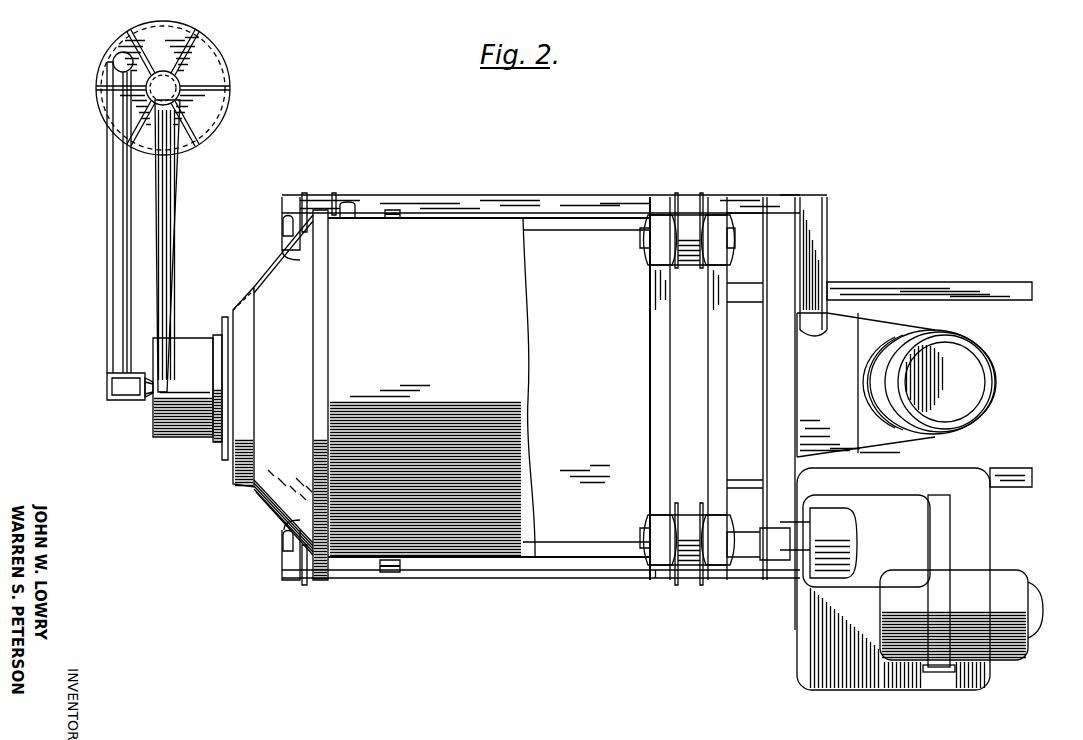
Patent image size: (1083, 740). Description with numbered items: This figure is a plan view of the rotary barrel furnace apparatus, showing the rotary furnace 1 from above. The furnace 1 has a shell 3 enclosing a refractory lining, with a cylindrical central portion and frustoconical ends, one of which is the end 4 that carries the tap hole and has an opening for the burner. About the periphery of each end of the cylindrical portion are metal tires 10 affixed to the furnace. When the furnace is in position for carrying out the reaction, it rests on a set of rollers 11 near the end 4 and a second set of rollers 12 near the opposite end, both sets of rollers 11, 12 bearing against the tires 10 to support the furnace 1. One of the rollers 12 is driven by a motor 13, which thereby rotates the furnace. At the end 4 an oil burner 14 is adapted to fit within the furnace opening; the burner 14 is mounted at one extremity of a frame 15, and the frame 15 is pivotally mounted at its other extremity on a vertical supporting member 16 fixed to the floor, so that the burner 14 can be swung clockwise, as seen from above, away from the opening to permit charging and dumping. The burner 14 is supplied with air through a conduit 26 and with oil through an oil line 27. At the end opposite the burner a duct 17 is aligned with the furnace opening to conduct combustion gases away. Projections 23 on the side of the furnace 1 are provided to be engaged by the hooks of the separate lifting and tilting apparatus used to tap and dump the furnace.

The rotary furnace 1 is at (503, 232).
The shell 3 is at (474, 340).
The end 4 is at (291, 340).
The metal tires 10 is at (325, 360).
The set of rollers 11 is at (322, 572).
The second set of rollers 12 is at (693, 565).
The motor 13 is at (1005, 613).
The oil burner 14 is at (183, 436).
The frame 15 is at (172, 200).
The vertical supporting member 16 is at (173, 86).
The duct 17 is at (960, 352).
The projections 23 is at (378, 606).
The conduit 26 is at (127, 270).
The oil line 27 is at (107, 212).